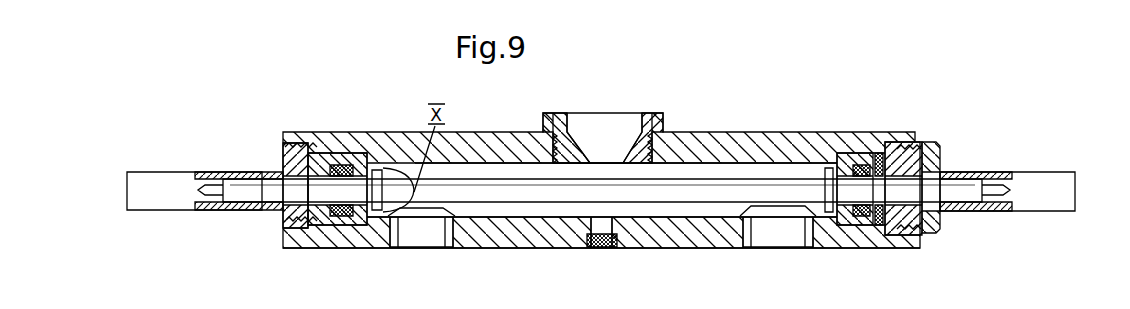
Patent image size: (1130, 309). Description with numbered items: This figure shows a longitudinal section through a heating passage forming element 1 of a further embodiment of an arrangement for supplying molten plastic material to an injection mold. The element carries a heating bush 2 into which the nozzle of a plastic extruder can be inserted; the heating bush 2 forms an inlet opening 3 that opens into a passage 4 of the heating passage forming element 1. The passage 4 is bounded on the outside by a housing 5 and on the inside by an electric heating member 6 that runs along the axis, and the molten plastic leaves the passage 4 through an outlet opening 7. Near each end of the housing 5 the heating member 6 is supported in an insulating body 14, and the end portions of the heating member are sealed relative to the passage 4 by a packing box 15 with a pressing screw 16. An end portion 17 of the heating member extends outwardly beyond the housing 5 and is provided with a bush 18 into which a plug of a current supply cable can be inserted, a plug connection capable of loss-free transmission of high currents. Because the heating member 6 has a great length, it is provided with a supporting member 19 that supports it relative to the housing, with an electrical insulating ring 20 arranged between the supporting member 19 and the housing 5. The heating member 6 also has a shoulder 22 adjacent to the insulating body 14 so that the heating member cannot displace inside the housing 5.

The heating passage forming element 1 is at (870, 131).
The heating bush 2 is at (647, 133).
The inlet opening 3 is at (593, 162).
The passage 4 is at (770, 170).
The housing 5 is at (693, 237).
The electric heating member 6 is at (717, 190).
The outlet opening 7 is at (418, 232).
The insulating body 14 is at (855, 220).
The packing box 15 is at (876, 226).
The pressing screw 16 is at (910, 160).
The end portion 17 is at (300, 186).
The bush 18 is at (1047, 187).
The supporting member 19 is at (577, 247).
The electrical insulating ring 20 is at (602, 247).
The shoulder 22 is at (368, 177).